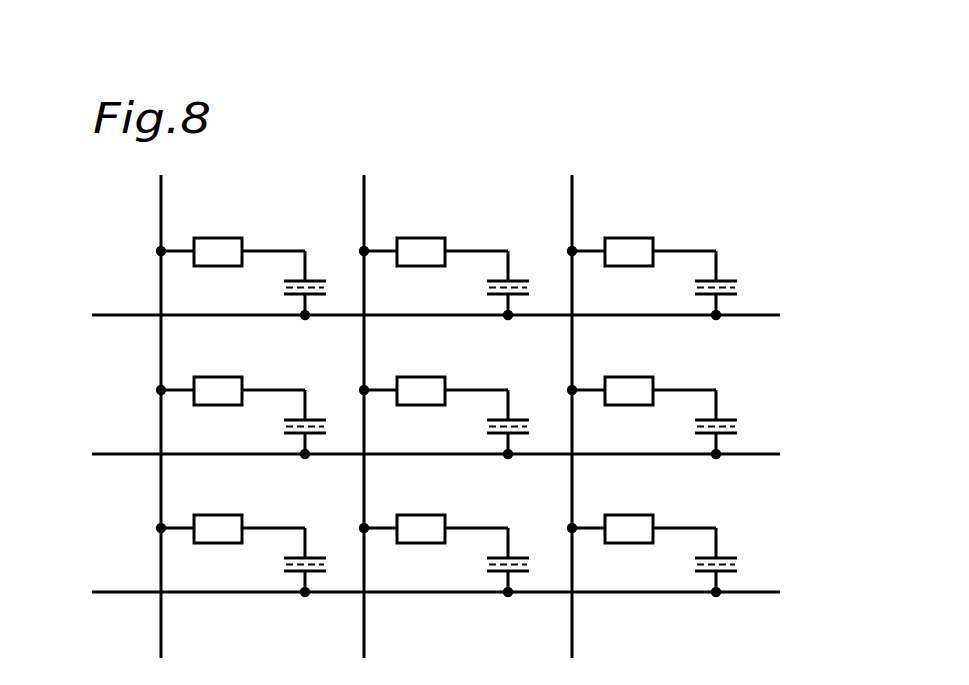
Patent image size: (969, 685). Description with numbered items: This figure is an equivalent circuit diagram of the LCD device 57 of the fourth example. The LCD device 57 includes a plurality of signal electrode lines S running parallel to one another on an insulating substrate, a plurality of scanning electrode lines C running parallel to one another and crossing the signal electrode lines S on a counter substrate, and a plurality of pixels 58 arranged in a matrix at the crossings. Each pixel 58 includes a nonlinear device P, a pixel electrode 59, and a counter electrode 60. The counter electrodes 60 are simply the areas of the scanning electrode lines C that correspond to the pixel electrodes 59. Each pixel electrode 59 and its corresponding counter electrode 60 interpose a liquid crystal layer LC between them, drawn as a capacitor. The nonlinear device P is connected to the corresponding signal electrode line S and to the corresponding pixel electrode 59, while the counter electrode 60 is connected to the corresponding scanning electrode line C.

The LCD device 57 is at (801, 186).
The pixel 58 is at (746, 382).
The pixel electrode 59 is at (735, 281).
The counter electrode 60 is at (727, 297).
The signal electrode line S is at (161, 200).
The scanning electrode line C is at (105, 312).
The nonlinear device P is at (437, 363).
The liquid crystal layer LC is at (551, 416).